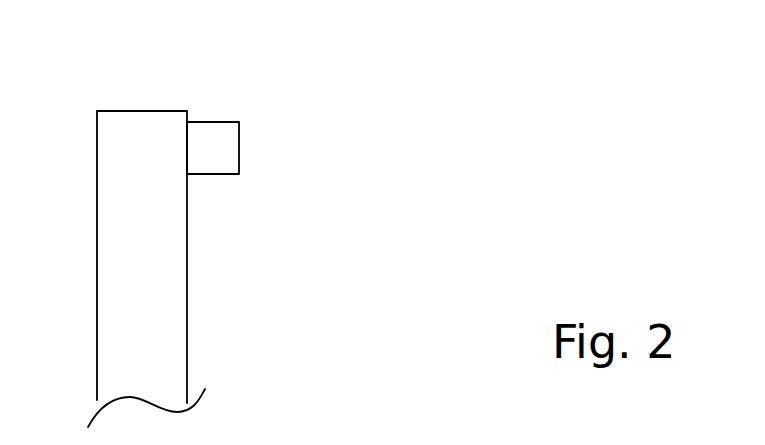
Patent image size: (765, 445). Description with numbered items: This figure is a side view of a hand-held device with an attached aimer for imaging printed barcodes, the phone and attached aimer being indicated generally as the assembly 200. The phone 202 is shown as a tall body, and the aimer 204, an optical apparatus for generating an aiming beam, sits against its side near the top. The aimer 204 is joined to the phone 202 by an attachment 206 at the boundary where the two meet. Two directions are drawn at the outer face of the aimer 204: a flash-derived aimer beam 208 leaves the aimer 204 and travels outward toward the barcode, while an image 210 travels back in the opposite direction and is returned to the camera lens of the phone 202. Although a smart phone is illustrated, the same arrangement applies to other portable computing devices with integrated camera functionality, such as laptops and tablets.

The phone and attached aimer 200 is at (364, 306).
The phone 202 is at (187, 368).
The aimer 204 is at (207, 120).
The attachment 206 is at (200, 183).
The flash-derived aimer beam 208 is at (240, 158).
The image returned to camera lens 210 is at (254, 131).